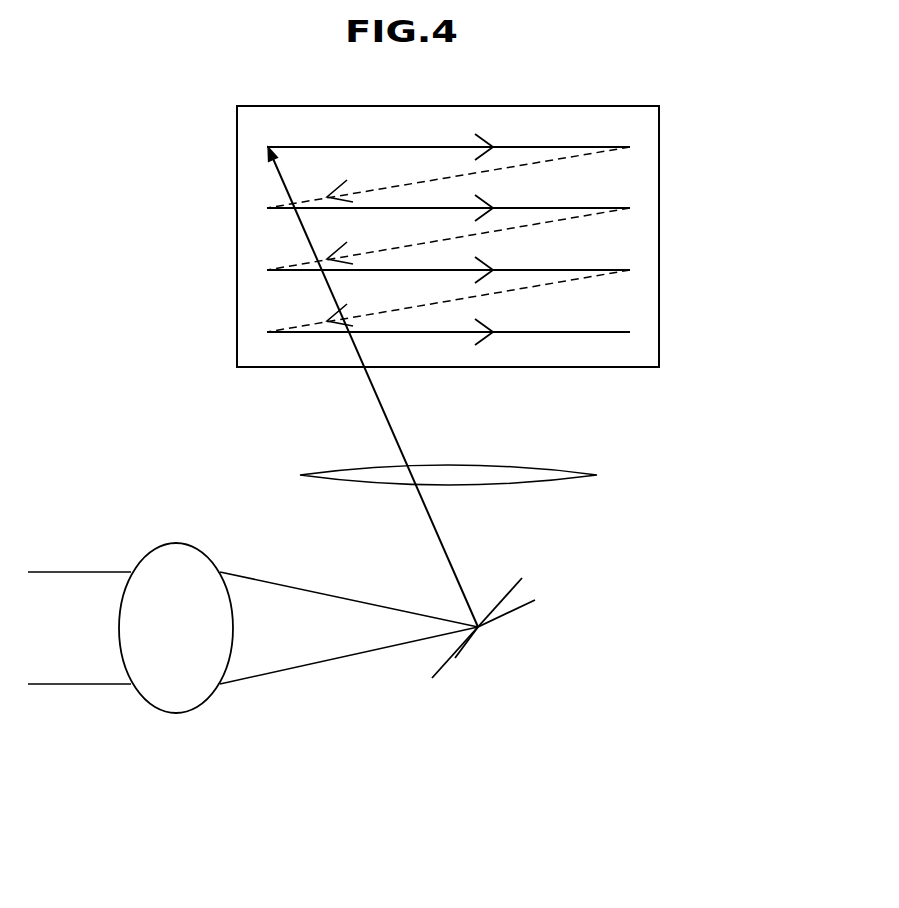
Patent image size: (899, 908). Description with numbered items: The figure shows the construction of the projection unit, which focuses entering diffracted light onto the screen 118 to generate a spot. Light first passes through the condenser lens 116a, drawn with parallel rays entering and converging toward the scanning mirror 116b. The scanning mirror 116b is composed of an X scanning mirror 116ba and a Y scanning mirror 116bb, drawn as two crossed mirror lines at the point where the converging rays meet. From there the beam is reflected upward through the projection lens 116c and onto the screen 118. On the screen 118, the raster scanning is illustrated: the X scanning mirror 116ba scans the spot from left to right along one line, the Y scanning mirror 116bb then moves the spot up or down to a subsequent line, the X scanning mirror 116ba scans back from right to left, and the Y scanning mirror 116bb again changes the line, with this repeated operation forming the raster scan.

The screen 118 is at (659, 293).
The projection lens 116c is at (597, 475).
The condenser lens 116a is at (177, 713).
The scanning mirror 116b is at (477, 695).
The X scanning mirror 116ba is at (424, 655).
The Y scanning mirror 116bb is at (455, 658).